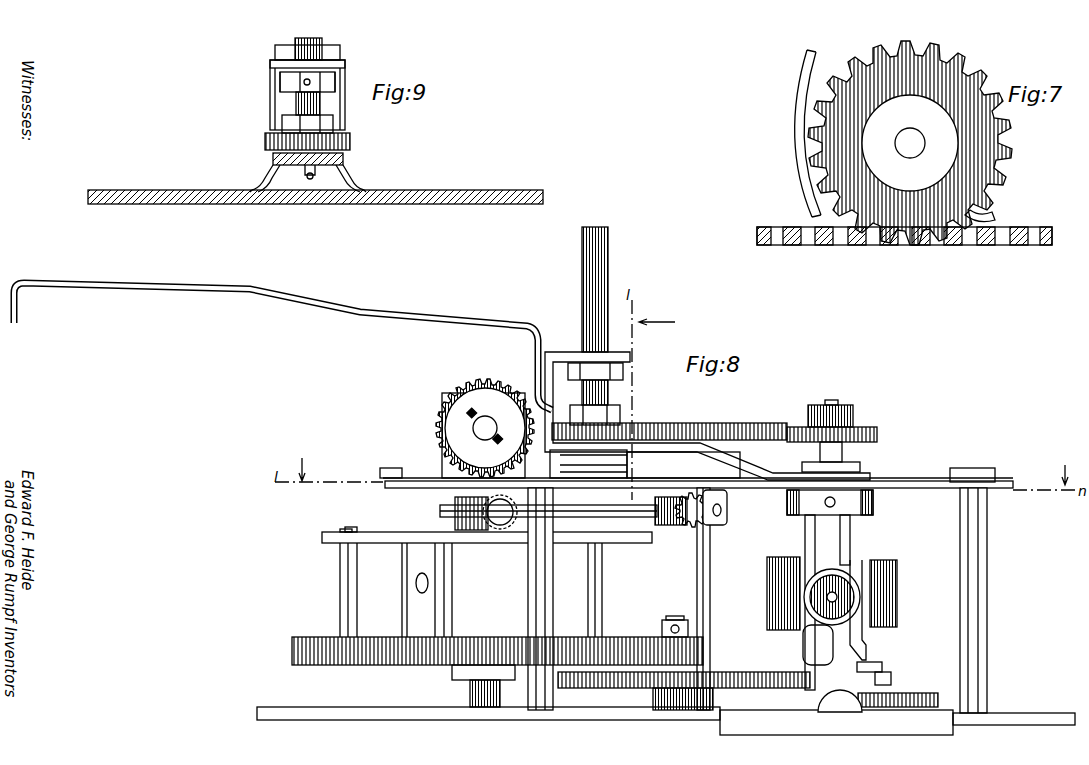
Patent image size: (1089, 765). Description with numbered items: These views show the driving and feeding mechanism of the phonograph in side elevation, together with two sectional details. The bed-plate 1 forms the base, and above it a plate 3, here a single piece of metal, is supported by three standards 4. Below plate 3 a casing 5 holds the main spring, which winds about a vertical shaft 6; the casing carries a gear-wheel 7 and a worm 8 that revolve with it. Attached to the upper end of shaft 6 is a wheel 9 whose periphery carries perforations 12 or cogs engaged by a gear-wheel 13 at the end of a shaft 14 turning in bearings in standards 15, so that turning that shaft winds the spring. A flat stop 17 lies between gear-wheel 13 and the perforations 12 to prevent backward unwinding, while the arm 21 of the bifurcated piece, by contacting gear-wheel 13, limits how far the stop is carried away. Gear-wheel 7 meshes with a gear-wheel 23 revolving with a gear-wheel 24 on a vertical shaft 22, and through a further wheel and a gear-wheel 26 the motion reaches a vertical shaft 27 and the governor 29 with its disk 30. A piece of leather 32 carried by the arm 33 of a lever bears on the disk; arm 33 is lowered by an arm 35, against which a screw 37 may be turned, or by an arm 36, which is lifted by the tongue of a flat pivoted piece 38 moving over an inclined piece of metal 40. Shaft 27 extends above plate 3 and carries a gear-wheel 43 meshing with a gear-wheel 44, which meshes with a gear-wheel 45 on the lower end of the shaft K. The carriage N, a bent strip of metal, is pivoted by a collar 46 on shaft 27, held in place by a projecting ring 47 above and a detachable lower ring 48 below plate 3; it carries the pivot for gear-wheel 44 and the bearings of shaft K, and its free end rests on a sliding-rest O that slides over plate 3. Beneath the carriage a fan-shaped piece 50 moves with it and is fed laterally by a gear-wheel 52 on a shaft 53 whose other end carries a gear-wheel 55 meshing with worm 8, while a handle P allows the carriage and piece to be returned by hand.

In FIG. 8, the bed-plate 1 is at (276, 707).
In FIG. 9, the plate 3 is at (465, 191).
In FIG. 8, the plate 3 is at (1008, 482).
In FIG. 8, the standards 4 is at (528, 586).
In FIG. 8, the casing 5 is at (326, 540).
In FIG. 8, the vertical shaft 6 is at (470, 690).
In FIG. 8, the gear-wheel 7 is at (292, 649).
In FIG. 8, the worm 8 is at (502, 530).
In FIG. 7, the wheel 9 is at (1052, 237).
In FIG. 8, the wheel 9 is at (386, 470).
In FIG. 7, the perforations 12 is at (990, 246).
In FIG. 7, the gear-wheel 13 is at (985, 62).
In FIG. 8, the gear-wheel 13 is at (465, 390).
In FIG. 8, the shaft 14 is at (473, 428).
In FIG. 8, the standards 15 is at (441, 399).
In FIG. 7, the stop 17 is at (990, 218).
In FIG. 7, the arm 21 is at (790, 141).
In FIG. 8, the vertical shaft 22 is at (672, 620).
In FIG. 8, the gear-wheel 23 is at (712, 663).
In FIG. 8, the gear-wheel 24 is at (596, 690).
In FIG. 8, the gear-wheel 26 is at (935, 696).
In FIG. 8, the vertical shaft 27 is at (832, 400).
In FIG. 8, the governor 29 is at (858, 532).
In FIG. 8, the disk 30 is at (903, 696).
In FIG. 8, the piece of leather 32 is at (893, 678).
In FIG. 8, the arm 33 is at (875, 661).
In FIG. 8, the arm 35 is at (866, 642).
In FIG. 8, the arm 36 is at (833, 668).
In FIG. 8, the screw 37 is at (850, 576).
In FIG. 8, the flat piece of metal 38 is at (848, 706).
In FIG. 8, the inclined piece of metal 40 is at (816, 735).
In FIG. 8, the gear-wheel 43 is at (877, 430).
In FIG. 8, the gear-wheel 44 is at (748, 427).
In FIG. 9, the gear-wheel 45 is at (350, 145).
In FIG. 8, the gear-wheel 45 is at (632, 423).
In FIG. 8, the collar 46 is at (842, 452).
In FIG. 8, the projecting ring 47 is at (865, 468).
In FIG. 8, the lower ring 48 is at (875, 506).
In FIG. 8, the fan-shaped piece of metal 50 is at (670, 475).
In FIG. 8, the gear-wheel 52 is at (715, 522).
In FIG. 8, the shaft 53 is at (608, 516).
In FIG. 8, the gear-wheel 55 is at (478, 531).
In FIG. 9, the shaft K is at (324, 46).
In FIG. 8, the shaft K is at (610, 236).
In FIG. 9, the carriage N is at (270, 100).
In FIG. 8, the carriage N is at (578, 350).
In FIG. 9, the sliding-rest O is at (352, 181).
In FIG. 8, the sliding-rest O is at (632, 465).
In FIG. 9, the handle P is at (341, 58).
In FIG. 8, the handle P is at (145, 290).